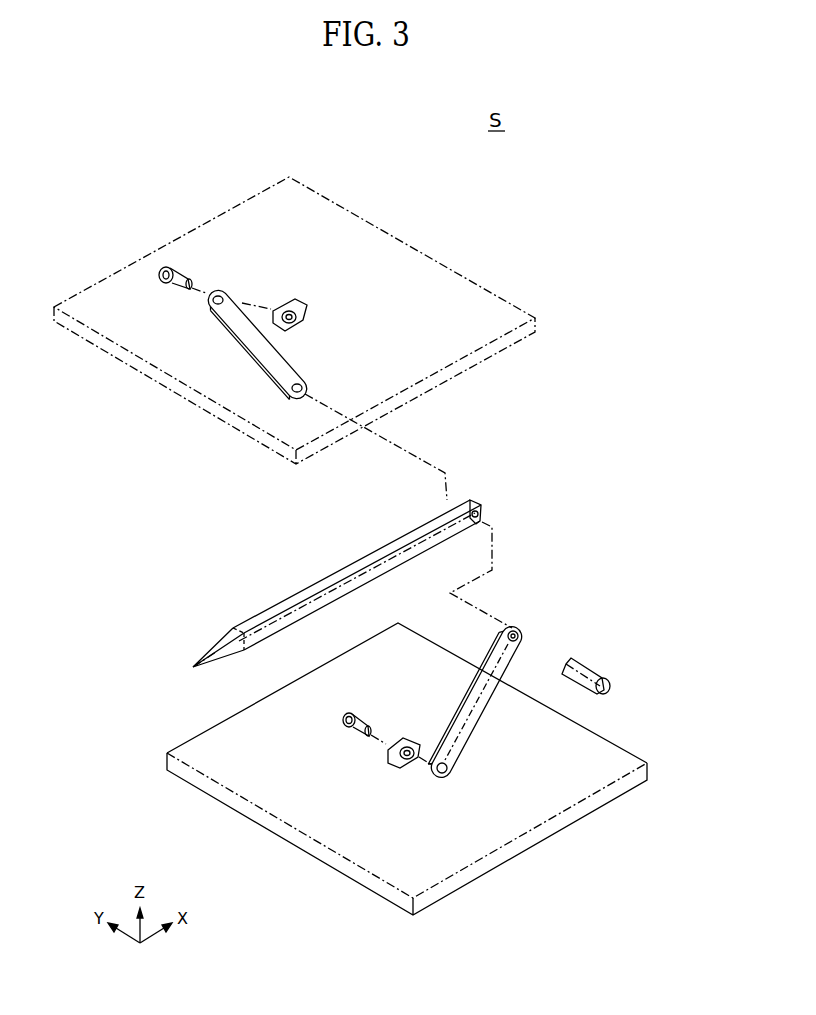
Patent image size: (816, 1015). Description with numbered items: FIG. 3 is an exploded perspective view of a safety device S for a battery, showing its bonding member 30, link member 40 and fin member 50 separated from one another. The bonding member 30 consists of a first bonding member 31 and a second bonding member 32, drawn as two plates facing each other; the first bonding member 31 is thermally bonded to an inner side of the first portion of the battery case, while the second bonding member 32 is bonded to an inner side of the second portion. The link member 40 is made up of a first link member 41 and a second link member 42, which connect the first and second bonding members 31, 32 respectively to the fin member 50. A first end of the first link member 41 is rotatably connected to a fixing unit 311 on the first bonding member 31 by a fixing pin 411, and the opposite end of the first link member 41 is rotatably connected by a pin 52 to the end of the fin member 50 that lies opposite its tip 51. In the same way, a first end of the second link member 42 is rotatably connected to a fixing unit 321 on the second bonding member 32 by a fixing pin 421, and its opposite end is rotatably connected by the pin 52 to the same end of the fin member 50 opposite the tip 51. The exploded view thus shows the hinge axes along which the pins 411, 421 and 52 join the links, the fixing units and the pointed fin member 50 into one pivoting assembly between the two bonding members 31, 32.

The bonding member 30 is at (560, 428).
The first bonding member 31 is at (440, 890).
The second bonding member 32 is at (493, 292).
The fixing unit 311 is at (391, 753).
The fixing unit 321 is at (297, 302).
The link member 40 is at (633, 428).
The first link member 41 is at (460, 737).
The second link member 42 is at (255, 358).
The fixing pin 411 is at (350, 728).
The fixing pin 421 is at (163, 270).
The fin member 50 is at (322, 583).
The tip 51 is at (216, 648).
The pin 52 is at (587, 673).